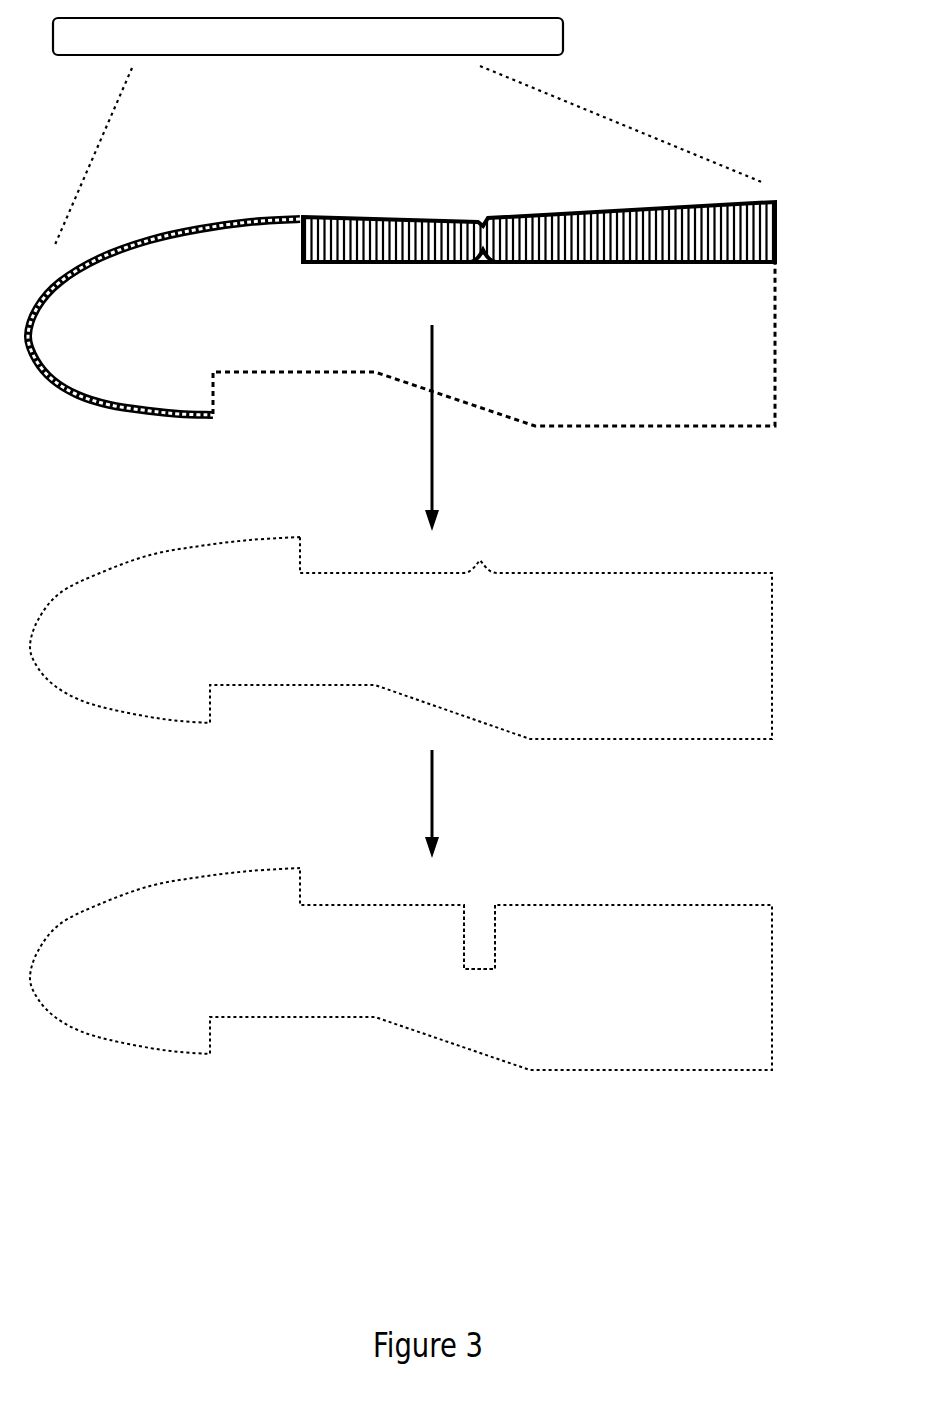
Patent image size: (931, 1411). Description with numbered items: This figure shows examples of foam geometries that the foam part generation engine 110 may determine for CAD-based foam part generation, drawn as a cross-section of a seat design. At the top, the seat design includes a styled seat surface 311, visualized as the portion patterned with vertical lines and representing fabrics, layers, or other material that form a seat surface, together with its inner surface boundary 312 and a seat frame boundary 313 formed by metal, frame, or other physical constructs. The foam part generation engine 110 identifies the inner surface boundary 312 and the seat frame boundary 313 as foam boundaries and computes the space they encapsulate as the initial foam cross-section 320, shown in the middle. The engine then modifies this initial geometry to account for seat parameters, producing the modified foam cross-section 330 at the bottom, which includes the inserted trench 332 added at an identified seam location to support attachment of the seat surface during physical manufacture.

The foam part generation engine 110 is at (549, 44).
The styled seat surface 311 is at (539, 232).
The inner surface boundary 312 is at (540, 264).
The seat frame boundary 313 is at (642, 428).
The initial foam cross-section 320 is at (389, 648).
The modified foam cross-section 330 is at (404, 978).
The inserted trench 332 is at (505, 927).